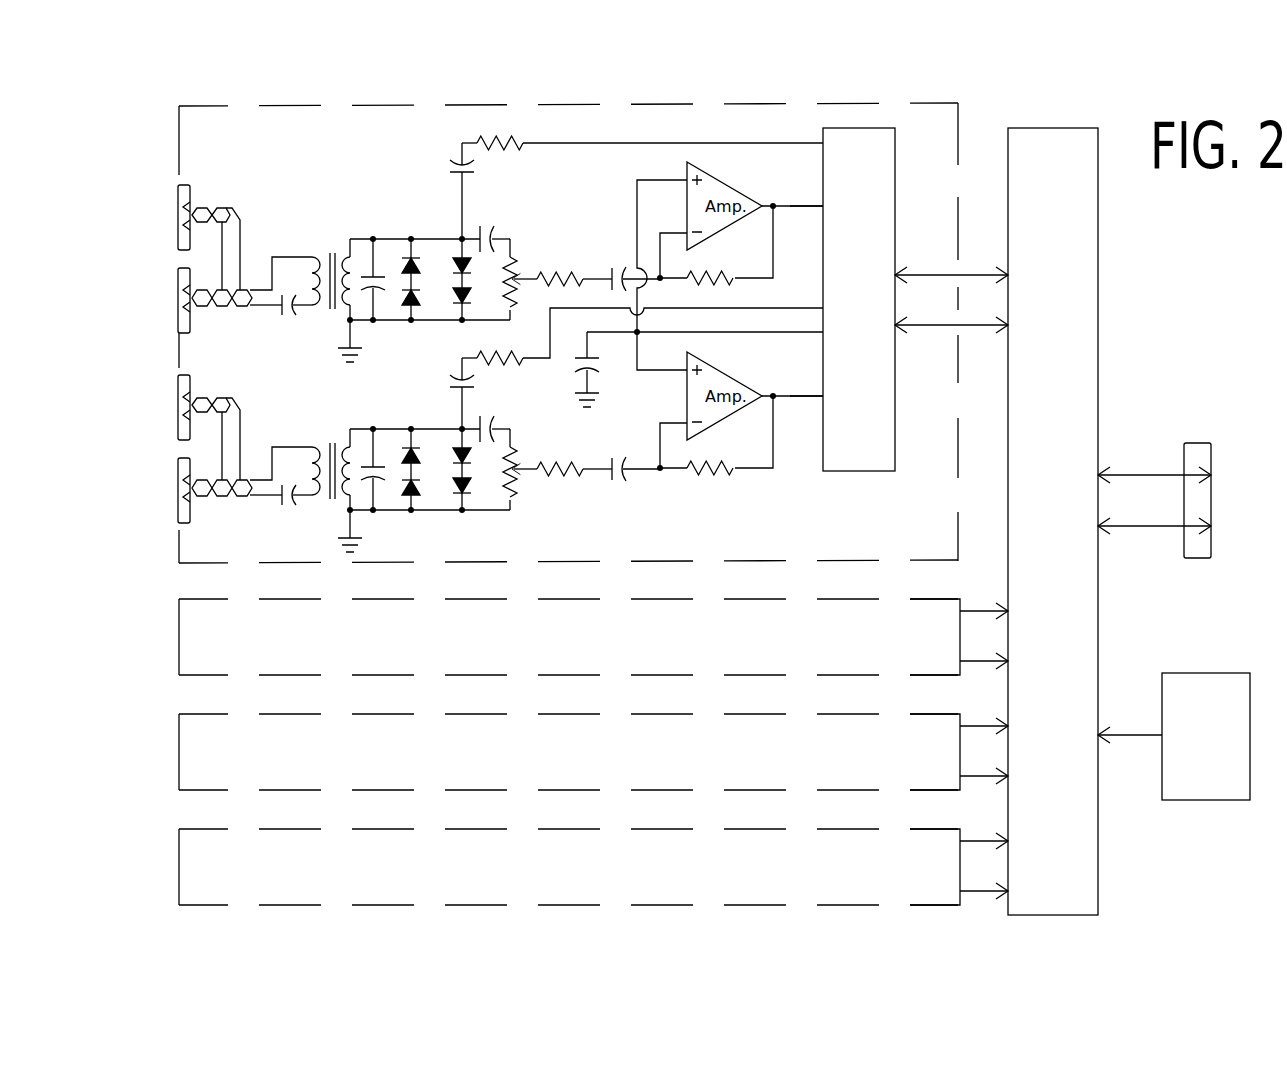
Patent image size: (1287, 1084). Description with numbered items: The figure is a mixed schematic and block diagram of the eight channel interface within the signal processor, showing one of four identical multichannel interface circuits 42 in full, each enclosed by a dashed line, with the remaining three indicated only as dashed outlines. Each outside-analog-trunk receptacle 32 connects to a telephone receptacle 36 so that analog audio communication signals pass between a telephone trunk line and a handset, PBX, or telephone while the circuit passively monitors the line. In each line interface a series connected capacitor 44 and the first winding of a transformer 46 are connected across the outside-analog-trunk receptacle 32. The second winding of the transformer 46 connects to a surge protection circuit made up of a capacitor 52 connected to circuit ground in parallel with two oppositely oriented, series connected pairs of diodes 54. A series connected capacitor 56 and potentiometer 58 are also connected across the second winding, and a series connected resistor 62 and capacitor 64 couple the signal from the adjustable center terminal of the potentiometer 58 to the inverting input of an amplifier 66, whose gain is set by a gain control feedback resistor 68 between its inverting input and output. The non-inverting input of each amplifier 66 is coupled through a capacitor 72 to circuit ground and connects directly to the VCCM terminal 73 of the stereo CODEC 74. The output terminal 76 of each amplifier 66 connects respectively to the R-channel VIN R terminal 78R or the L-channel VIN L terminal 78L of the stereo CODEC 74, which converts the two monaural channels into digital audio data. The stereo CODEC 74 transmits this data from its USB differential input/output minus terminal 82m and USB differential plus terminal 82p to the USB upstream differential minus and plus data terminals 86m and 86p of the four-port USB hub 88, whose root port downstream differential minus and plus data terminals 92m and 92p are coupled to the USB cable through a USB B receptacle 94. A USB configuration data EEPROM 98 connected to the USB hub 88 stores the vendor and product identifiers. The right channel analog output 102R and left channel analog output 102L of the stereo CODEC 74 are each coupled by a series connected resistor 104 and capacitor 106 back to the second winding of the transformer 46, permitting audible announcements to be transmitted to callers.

The outside-analog-trunk receptacle 32 is at (175, 218).
The telephone receptacle 36 is at (175, 298).
The multichannel interface circuit 42 is at (178, 122).
The capacitor 44 is at (287, 324).
The transformer 46 is at (330, 318).
The capacitor 52 is at (375, 275).
The diodes 54 is at (452, 287).
The capacitor 56 is at (488, 226).
The potentiometer 58 is at (514, 265).
The resistor 62 is at (560, 272).
The capacitor 64 is at (622, 264).
The amplifier 66 is at (725, 190).
The gain control feedback resistor 68 is at (718, 272).
The capacitor 72 is at (580, 368).
The VCCM terminal 73 is at (823, 332).
The stereo CODEC 74 is at (848, 166).
The output terminal 76 is at (775, 204).
The R-channel VIN R terminal 78R is at (820, 207).
The L-channel VIN L terminal 78L is at (820, 397).
The USB differential input/output minus terminal 82m is at (902, 272).
The USB differential plus terminal 82p is at (902, 328).
The USB upstream differential minus data terminal 86m is at (1003, 272).
The USB upstream differential plus data terminal 86p is at (1003, 328).
The 4-port USB hub 88 is at (1042, 166).
The root port USB downstream differential minus data terminal 92m is at (1102, 472).
The root port USB downstream differential plus data terminal 92p is at (1102, 530).
The USB B receptacle 94 is at (1195, 443).
The USB configuration data EEPROM 98 is at (1205, 673).
The right channel analog output 102R is at (822, 136).
The left channel analog output 102L is at (822, 308).
The resistor 104 is at (495, 138).
The capacitor 106 is at (455, 160).